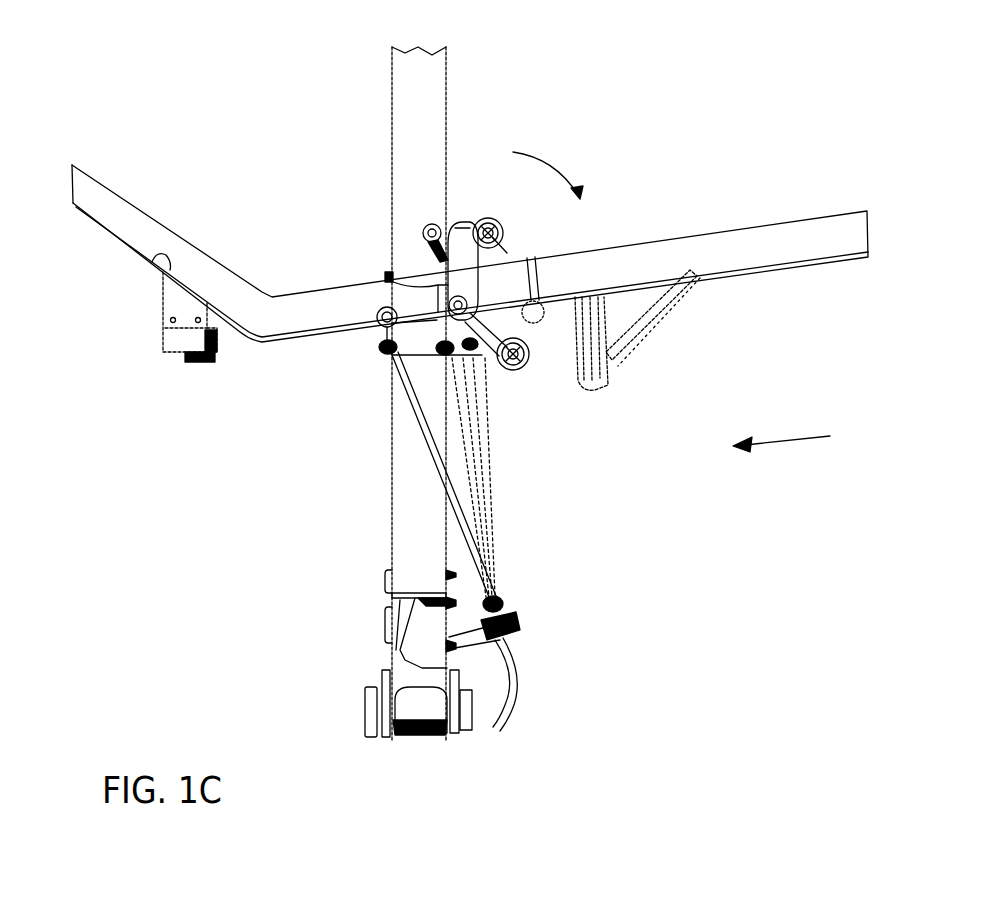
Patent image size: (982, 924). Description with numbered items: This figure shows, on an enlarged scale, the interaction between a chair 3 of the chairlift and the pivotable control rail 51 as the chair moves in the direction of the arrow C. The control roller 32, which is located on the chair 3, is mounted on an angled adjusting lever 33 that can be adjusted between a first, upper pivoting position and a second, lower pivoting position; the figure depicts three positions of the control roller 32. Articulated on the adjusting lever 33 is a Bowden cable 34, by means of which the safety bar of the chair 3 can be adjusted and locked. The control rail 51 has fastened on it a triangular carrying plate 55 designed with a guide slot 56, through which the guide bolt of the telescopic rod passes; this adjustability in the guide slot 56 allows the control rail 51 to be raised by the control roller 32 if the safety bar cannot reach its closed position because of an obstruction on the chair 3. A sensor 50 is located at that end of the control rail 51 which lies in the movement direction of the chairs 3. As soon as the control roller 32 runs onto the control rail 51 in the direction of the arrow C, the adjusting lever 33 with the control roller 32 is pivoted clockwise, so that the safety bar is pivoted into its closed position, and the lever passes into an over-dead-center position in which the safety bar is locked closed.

The chair 3 is at (403, 517).
The control roller 32 is at (503, 225).
The adjusting lever 33 is at (383, 310).
The Bowden cable 34 is at (423, 433).
The sensor 50 is at (192, 362).
The control rail 51 is at (790, 252).
The carrying plate 55 is at (643, 335).
The guide slot 56 is at (603, 378).
The arrow C is at (781, 427).